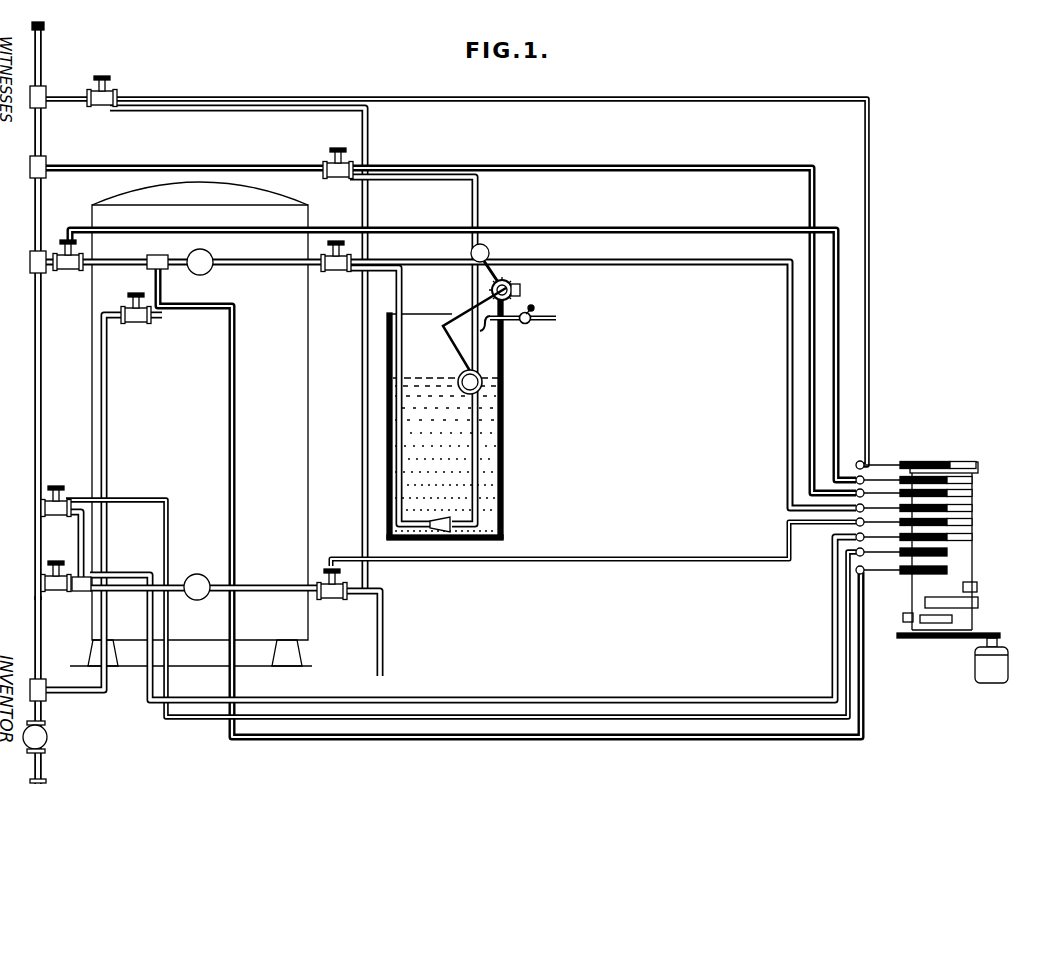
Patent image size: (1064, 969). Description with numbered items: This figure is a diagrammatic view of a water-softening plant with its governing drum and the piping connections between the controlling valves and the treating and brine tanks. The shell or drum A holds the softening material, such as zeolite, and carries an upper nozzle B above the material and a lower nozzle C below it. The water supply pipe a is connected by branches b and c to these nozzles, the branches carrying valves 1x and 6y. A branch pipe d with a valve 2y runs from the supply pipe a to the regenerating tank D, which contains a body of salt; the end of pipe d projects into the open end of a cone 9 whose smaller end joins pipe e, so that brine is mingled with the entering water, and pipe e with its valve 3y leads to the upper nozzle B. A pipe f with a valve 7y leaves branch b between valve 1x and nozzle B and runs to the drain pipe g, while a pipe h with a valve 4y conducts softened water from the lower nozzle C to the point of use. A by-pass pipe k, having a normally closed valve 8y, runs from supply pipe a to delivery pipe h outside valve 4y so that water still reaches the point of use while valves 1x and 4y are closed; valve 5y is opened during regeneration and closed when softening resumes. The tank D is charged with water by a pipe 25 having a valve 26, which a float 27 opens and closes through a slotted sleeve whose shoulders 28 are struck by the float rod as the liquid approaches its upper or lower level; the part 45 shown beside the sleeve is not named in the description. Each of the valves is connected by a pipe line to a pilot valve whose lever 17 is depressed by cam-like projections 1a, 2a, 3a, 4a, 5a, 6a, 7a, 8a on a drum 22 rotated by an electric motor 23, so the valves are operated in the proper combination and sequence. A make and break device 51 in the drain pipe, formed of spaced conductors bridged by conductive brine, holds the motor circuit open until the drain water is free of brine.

The water supply pipe a is at (33, 314).
The branch pipe b is at (112, 259).
The branch pipe c is at (77, 542).
The branch pipe d is at (270, 161).
The pipe e is at (296, 268).
The pipe f is at (108, 405).
The drain pipe g is at (56, 650).
The delivery pipe h is at (270, 586).
The by-pass pipe k is at (360, 407).
The shell or drum A is at (191, 424).
The upper nozzle B is at (212, 254).
The lower nozzle C is at (199, 574).
The regenerating tank D is at (504, 423).
The valve 1x is at (69, 274).
The valve 2y is at (339, 182).
The valve 3y is at (337, 276).
The valve 4y is at (335, 603).
The valve 5y is at (60, 592).
The valve 6y is at (53, 519).
The valve 7y is at (140, 325).
The by-pass valve 8y is at (104, 109).
The cone 9 is at (441, 532).
The lever 17 is at (886, 461).
The drum 22 is at (952, 453).
The electric motor 23 is at (975, 665).
The water supply pipe 25 is at (556, 321).
The valve 26 is at (527, 326).
The float 27 is at (484, 383).
The shoulders 28 is at (514, 281).
The hub 45 is at (521, 292).
The make and break device 51 is at (48, 734).
The cam-like projection 1a is at (977, 483).
The cam-like projection 2a is at (977, 499).
The cam-like projection 3a is at (977, 512).
The cam-like projection 4a is at (977, 526).
The cam-like projection 5a is at (977, 540).
The cam-like projection 6a is at (930, 557).
The cam-like projection 7a is at (908, 576).
The cam-like projection 8a is at (960, 463).